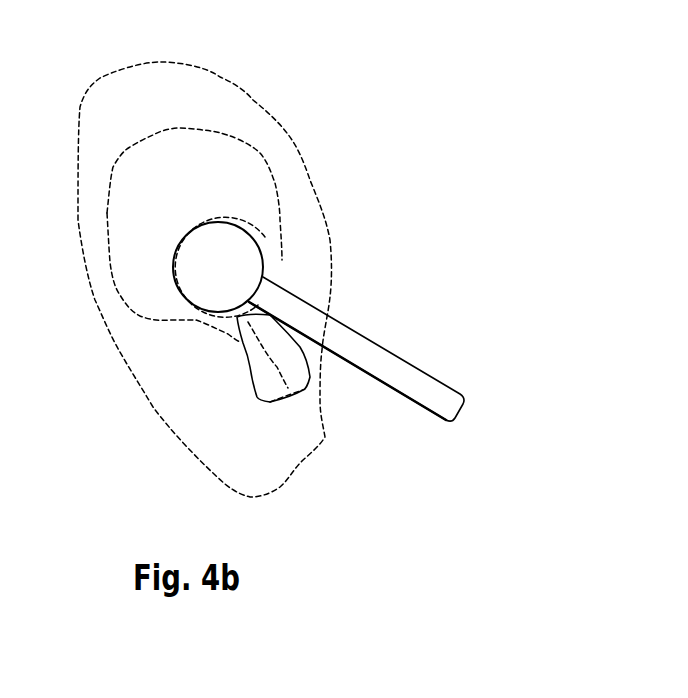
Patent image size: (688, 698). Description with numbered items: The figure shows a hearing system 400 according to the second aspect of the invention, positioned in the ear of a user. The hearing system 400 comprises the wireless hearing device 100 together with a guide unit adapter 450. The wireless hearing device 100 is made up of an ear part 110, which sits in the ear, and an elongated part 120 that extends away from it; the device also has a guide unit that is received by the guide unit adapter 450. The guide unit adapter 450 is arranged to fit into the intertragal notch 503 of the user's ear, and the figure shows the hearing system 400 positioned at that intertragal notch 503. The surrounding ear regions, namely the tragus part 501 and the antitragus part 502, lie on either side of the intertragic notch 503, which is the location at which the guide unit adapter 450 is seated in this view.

The hearing system 400 is at (377, 86).
The wireless hearing device 100 is at (300, 271).
The ear part 110 is at (228, 236).
The elongated part 120 is at (432, 376).
The guide unit adapter 450 is at (278, 393).
The tragus part 501 is at (297, 336).
The antitragus part 502 is at (248, 401).
The intertragic notch 503 is at (302, 395).